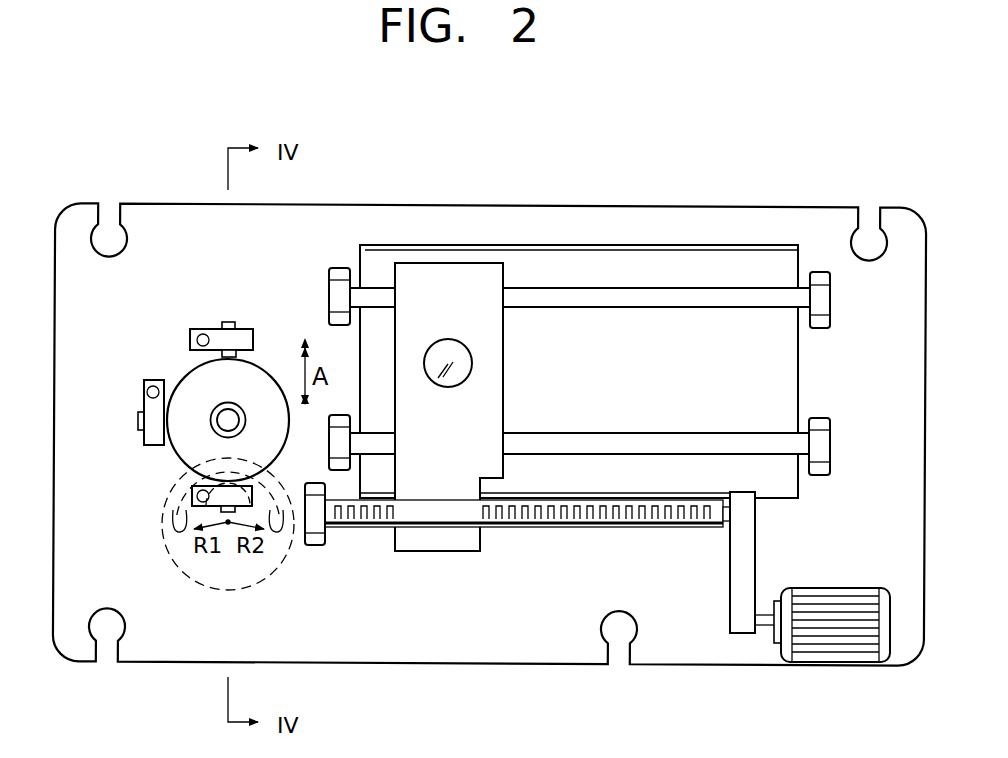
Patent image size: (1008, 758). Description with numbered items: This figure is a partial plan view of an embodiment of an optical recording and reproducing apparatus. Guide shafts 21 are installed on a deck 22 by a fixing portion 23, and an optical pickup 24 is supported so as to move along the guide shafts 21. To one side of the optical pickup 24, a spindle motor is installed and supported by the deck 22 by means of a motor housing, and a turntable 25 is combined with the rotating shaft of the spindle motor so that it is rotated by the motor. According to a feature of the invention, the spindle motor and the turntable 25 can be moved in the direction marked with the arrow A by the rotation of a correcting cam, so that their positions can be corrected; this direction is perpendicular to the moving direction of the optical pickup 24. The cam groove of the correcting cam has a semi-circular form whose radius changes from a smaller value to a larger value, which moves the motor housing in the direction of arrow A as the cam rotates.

The guide shafts 21 is at (717, 300).
The deck 22 is at (708, 226).
The fixing portion 23 is at (820, 270).
The optical pickup 24 is at (488, 373).
The turntable 25 is at (215, 403).